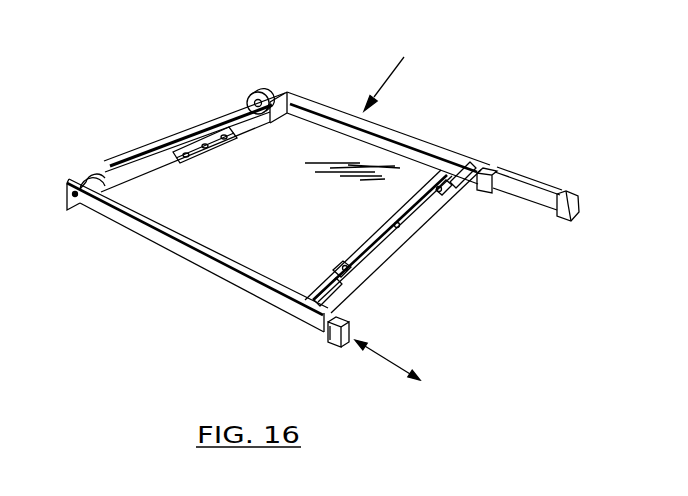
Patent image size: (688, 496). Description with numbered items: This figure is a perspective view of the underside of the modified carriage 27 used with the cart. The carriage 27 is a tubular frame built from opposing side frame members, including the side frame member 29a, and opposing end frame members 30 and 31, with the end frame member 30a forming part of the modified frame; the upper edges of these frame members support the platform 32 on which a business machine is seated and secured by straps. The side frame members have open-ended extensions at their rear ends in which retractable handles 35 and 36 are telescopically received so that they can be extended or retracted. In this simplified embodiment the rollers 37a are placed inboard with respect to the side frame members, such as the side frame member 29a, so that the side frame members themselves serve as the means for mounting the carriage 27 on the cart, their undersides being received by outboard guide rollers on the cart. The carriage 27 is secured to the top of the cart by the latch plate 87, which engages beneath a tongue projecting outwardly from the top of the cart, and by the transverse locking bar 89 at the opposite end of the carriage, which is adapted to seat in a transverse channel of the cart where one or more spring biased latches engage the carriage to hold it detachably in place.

The carriage 27 is at (384, 75).
The side frame member 29a is at (200, 272).
The end frame member 30 is at (184, 131).
The end frame member 30a is at (385, 133).
The end frame member 31 is at (422, 232).
The platform 32 is at (304, 207).
The retractable handle 35 is at (522, 179).
The retractable handle 36 is at (336, 316).
The rollers 37a is at (95, 170).
The latch plate 87 is at (228, 148).
The transverse locking bar 89 is at (376, 246).